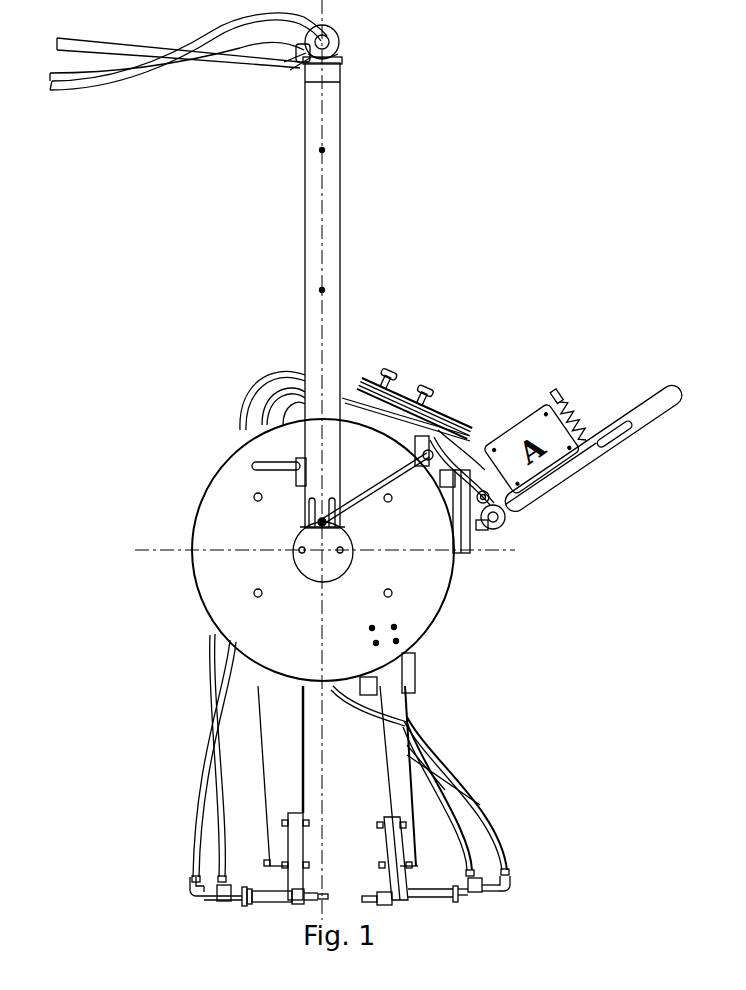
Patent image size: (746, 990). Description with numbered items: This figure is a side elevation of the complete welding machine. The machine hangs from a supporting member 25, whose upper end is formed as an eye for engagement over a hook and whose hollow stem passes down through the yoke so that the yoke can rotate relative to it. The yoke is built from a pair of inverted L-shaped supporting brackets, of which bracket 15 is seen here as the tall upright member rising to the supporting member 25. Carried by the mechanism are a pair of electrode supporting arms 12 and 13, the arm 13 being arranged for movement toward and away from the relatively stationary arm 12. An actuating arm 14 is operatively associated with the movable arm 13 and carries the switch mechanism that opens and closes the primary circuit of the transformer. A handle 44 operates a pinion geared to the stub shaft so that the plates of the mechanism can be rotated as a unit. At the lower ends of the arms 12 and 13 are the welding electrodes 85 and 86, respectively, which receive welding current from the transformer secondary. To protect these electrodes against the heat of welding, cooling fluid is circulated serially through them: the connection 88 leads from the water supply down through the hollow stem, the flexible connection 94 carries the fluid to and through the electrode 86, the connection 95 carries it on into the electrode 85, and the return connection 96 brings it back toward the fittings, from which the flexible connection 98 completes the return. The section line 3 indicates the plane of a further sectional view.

The section line 3- 3 is at (345, 13).
The electrode supporting arm 12 is at (293, 783).
The electrode supporting arm 13 is at (393, 767).
The actuating arm 14 is at (644, 412).
The supporting bracket 15 is at (335, 247).
The supporting member 25 is at (340, 38).
The handle 44 is at (370, 492).
The electrode 85 is at (321, 892).
The electrode 86 is at (365, 897).
The connection 88 is at (108, 93).
The flexible connection 94 is at (418, 740).
The flexible connection 95 is at (197, 798).
The return connection 96 is at (227, 836).
The flexible connection 98 is at (194, 40).